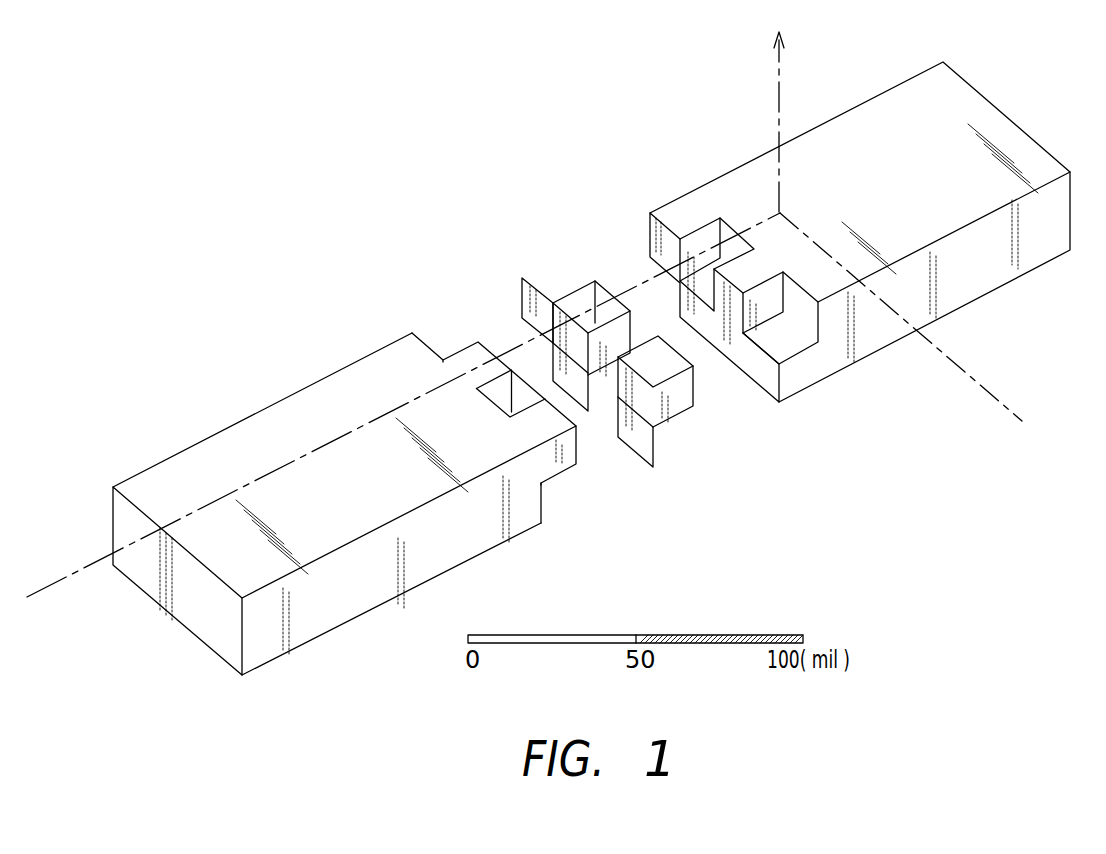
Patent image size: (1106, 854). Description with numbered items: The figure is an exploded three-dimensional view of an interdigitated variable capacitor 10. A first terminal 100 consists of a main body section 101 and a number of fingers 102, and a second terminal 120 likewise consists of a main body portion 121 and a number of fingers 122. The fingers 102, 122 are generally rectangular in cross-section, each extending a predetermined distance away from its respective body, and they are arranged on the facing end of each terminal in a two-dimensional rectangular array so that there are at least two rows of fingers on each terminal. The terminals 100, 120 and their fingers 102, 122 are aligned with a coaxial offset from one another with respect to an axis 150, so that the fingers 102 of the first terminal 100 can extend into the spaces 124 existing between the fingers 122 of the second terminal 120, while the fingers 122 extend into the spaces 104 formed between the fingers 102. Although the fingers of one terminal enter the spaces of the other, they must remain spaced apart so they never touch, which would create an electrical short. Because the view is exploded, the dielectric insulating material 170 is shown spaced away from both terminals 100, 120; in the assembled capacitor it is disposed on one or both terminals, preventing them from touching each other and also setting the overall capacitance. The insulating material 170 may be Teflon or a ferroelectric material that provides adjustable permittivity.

The interdigitated variable capacitor 10 is at (477, 142).
The first terminal 100 is at (268, 409).
The main body section 101 is at (507, 542).
The fingers 102 is at (573, 467).
The spaces 104 is at (522, 400).
The second terminal 120 is at (904, 86).
The main body portion 121 is at (982, 297).
The fingers 122 is at (778, 400).
The spaces 124 is at (709, 240).
The axis 150 is at (93, 560).
The insulating material 170 is at (553, 303).